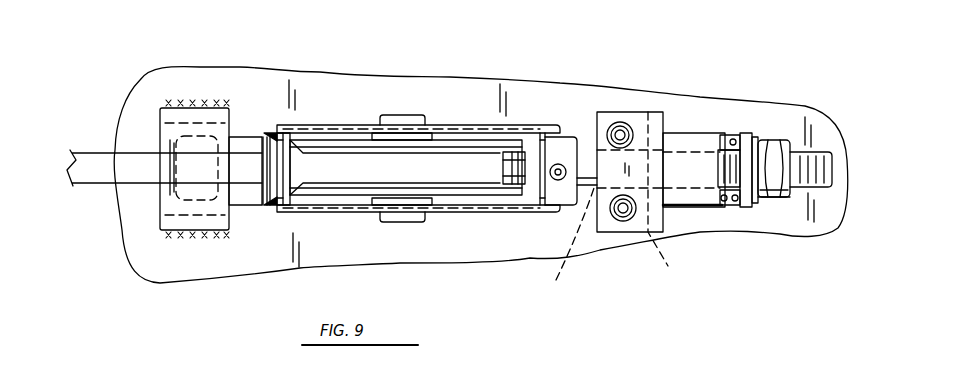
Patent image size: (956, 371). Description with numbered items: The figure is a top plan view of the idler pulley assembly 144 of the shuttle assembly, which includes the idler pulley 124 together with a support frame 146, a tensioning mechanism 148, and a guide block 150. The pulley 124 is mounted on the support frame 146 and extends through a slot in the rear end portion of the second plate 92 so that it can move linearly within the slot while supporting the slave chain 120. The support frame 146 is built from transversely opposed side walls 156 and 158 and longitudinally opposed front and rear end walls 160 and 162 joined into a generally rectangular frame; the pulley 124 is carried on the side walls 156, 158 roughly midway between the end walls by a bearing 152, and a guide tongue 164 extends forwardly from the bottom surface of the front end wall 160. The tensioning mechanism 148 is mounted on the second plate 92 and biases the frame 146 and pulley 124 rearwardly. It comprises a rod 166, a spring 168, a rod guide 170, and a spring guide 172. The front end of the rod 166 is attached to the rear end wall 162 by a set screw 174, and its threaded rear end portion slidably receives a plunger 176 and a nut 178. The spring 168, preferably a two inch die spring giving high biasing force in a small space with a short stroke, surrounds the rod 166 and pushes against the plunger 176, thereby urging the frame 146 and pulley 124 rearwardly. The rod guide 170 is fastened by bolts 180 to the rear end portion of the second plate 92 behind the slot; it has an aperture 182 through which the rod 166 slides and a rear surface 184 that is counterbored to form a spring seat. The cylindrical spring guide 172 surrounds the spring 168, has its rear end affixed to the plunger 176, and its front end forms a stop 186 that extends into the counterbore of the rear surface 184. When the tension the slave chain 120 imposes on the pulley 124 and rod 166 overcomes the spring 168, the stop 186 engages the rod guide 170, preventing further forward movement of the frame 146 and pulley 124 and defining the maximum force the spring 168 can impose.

The second plate 92 is at (810, 128).
The slave chain 120 is at (84, 150).
The idler pulley 124 is at (358, 190).
The idler pulley assembly 144 is at (586, 101).
The support frame 146 is at (266, 210).
The tensioning mechanism 148 is at (734, 120).
The guide block 150 is at (180, 106).
The bearing 152 is at (400, 115).
The side wall 156 is at (290, 210).
The side wall 158 is at (323, 125).
The front end wall 160 is at (262, 135).
The rear end wall 162 is at (560, 140).
The guide tongue 164 is at (238, 142).
The rod 166 is at (822, 195).
The spring 168 is at (757, 200).
The rod guide 170 is at (638, 232).
The spring guide 172 is at (700, 133).
The set screw 174 is at (552, 180).
The plunger 176 is at (756, 132).
The nut 178 is at (773, 198).
The bolts 180 is at (622, 132).
The aperture 182 is at (575, 239).
The rear surface 184 is at (683, 132).
The stop 186 is at (676, 196).